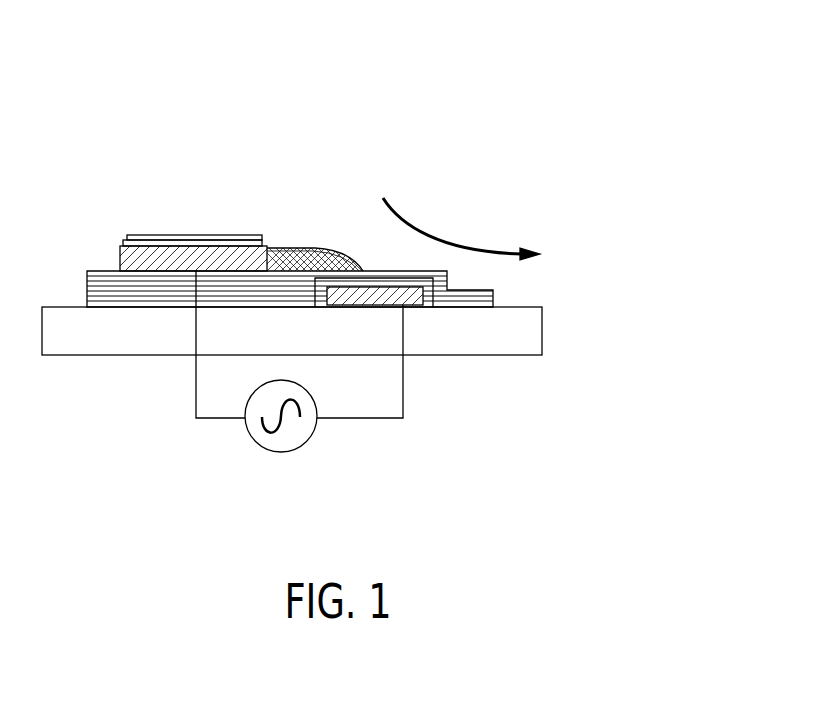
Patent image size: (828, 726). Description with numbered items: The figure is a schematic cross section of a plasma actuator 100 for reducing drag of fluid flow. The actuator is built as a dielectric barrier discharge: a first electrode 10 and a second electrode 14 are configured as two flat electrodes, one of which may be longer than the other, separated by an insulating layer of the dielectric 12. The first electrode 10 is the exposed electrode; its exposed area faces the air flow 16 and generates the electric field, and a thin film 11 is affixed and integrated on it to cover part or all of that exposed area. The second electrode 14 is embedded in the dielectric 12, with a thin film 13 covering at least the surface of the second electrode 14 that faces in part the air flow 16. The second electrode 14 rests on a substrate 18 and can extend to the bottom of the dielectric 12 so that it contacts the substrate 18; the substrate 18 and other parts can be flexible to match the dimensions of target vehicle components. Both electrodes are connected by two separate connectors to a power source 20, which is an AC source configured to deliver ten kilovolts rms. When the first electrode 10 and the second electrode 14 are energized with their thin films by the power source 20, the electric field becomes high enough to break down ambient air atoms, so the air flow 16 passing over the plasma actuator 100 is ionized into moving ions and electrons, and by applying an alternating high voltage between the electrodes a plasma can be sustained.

The plasma actuator 100 is at (538, 105).
The first electrode 10 is at (192, 197).
The thin film 11 is at (247, 235).
The dielectric 12 is at (357, 263).
The thin film 13 is at (448, 282).
The second electrode 14 is at (413, 295).
The air flow 16 is at (400, 213).
The substrate 18 is at (512, 325).
The power source 20 is at (278, 452).